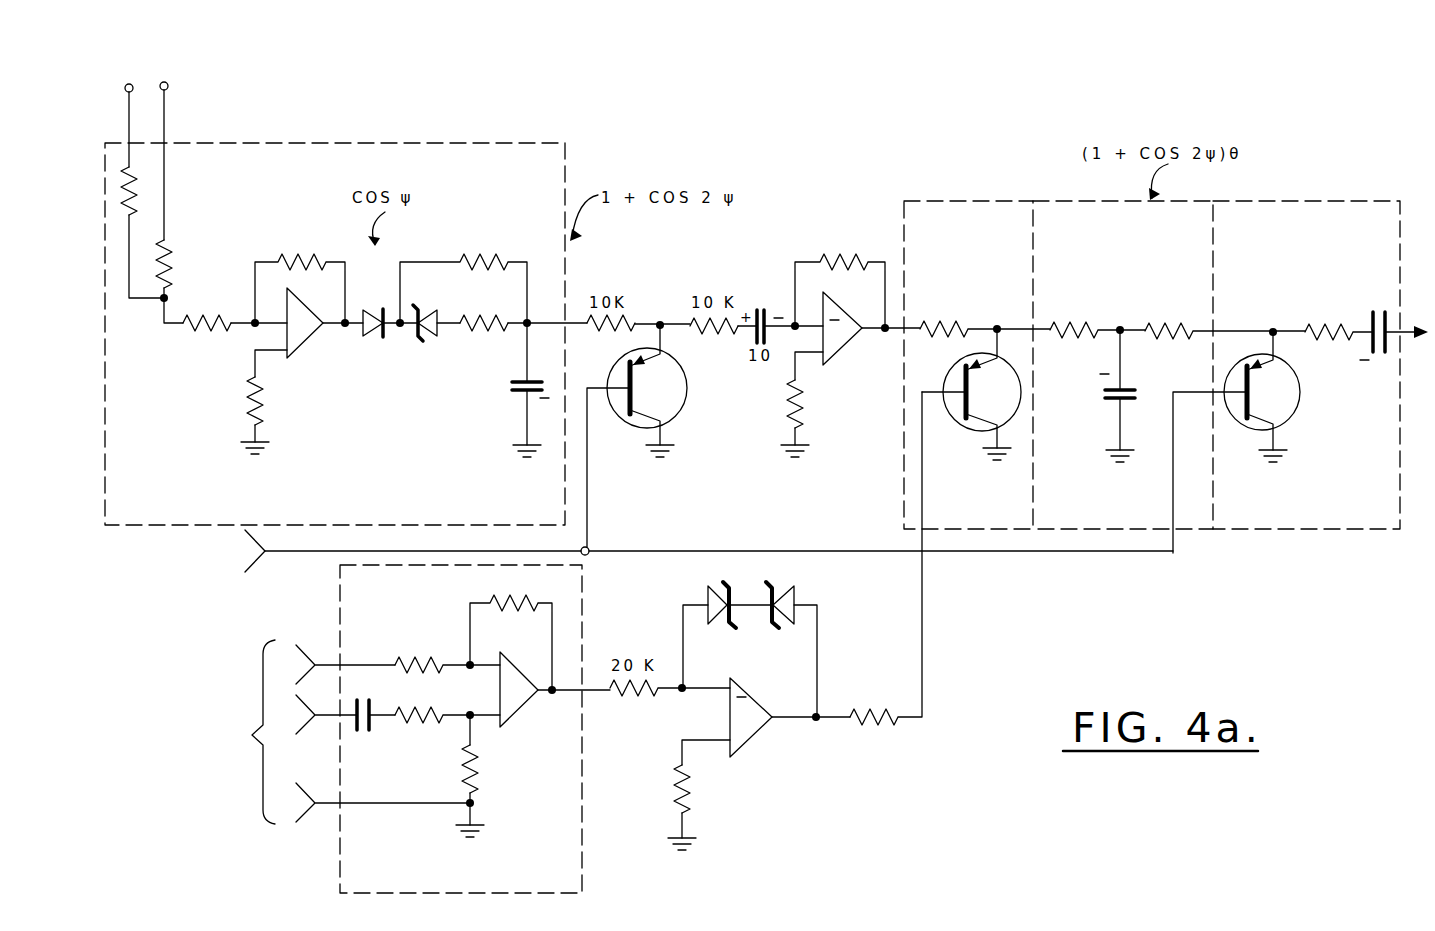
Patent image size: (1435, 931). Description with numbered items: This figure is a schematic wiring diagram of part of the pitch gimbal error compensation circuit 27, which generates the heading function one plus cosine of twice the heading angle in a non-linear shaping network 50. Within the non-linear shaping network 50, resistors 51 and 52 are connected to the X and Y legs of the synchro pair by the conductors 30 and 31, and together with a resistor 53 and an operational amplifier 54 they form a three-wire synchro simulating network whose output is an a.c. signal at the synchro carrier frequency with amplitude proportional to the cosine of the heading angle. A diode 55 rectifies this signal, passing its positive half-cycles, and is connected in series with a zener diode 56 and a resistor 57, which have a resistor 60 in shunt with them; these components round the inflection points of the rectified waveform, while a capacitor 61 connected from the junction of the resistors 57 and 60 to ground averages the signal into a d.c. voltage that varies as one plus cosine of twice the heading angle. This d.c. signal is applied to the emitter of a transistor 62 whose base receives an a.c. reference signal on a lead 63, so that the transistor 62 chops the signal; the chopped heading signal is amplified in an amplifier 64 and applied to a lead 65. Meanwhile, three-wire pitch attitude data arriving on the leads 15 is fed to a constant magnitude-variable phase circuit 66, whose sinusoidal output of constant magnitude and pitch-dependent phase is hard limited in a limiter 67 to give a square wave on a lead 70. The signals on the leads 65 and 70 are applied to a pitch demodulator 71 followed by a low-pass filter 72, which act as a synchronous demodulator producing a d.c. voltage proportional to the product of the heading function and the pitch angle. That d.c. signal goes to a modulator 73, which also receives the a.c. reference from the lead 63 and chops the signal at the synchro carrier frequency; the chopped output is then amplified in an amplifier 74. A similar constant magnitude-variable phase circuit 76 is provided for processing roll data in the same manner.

The pitch gimbal error compensation circuit 27 is at (875, 110).
The conductor 30 is at (144, 78).
The conductor 31 is at (228, 122).
The non-linear shaping network 50 is at (452, 143).
The resistor 51 is at (153, 195).
The resistor 52 is at (187, 206).
The resistor 53 is at (188, 331).
The operational amplifier 54 is at (310, 343).
The diode 55 is at (376, 340).
The zener diode 56 is at (420, 306).
The resistor 57 is at (483, 332).
The resistor 60 is at (462, 262).
The capacitor 61 is at (510, 399).
The transistor 62 is at (620, 414).
The lead 63 is at (310, 552).
The amplifier 64 is at (846, 350).
The lead 65 is at (890, 336).
The constant magnitude-variable phase circuit 66 is at (340, 630).
The limiter 67 is at (763, 731).
The lead 70 is at (930, 588).
The pitch demodulator 71 is at (964, 200).
The low-pass filter 72 is at (1094, 200).
The modulator 73 is at (1338, 201).
The amplifier 74 is at (1423, 405).
The constant magnitude-variable phase circuit 76 is at (586, 783).
The leads 15 is at (218, 766).